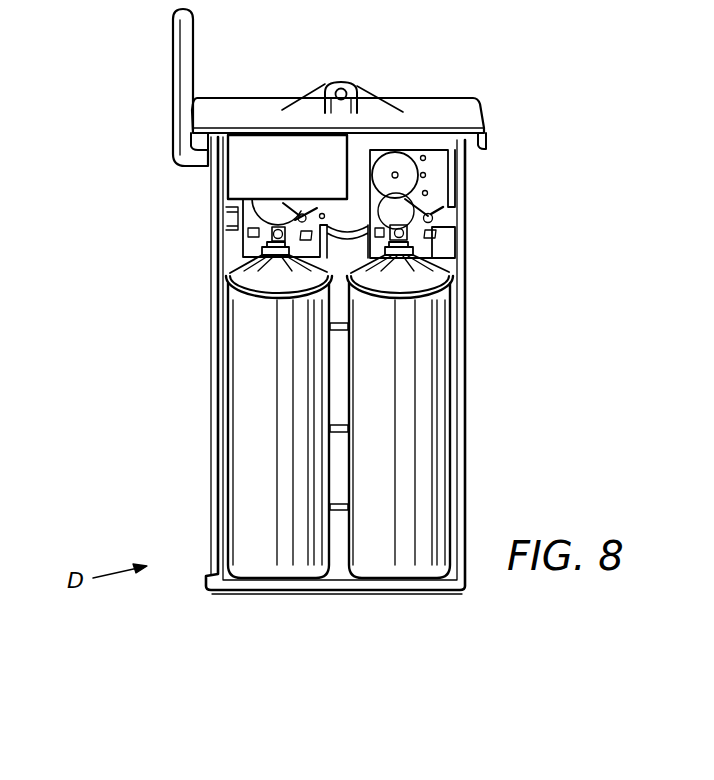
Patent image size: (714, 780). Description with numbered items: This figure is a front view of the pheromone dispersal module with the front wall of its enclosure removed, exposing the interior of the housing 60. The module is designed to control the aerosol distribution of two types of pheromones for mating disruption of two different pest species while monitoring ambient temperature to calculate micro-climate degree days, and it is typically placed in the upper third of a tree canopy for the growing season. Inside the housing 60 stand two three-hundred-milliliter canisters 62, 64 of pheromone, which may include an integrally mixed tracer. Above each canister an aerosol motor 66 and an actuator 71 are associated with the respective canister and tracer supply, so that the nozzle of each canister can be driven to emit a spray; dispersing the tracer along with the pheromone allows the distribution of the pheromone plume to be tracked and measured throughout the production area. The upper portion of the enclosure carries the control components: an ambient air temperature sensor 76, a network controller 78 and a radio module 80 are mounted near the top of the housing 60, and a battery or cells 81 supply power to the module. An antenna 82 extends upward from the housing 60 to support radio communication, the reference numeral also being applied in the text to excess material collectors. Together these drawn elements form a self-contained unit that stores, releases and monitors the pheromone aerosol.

The housing 60 is at (435, 442).
The canister of pheromone 62 is at (287, 557).
The canister of pheromone 64 is at (407, 560).
The aerosol motor 66 is at (415, 205).
The actuator 71 is at (270, 234).
The ambient air temperature sensor 76 is at (445, 158).
The network controller 78 is at (343, 143).
The radio module 80 is at (243, 180).
The battery or cells 81 is at (337, 358).
The antenna 82 is at (180, 58).